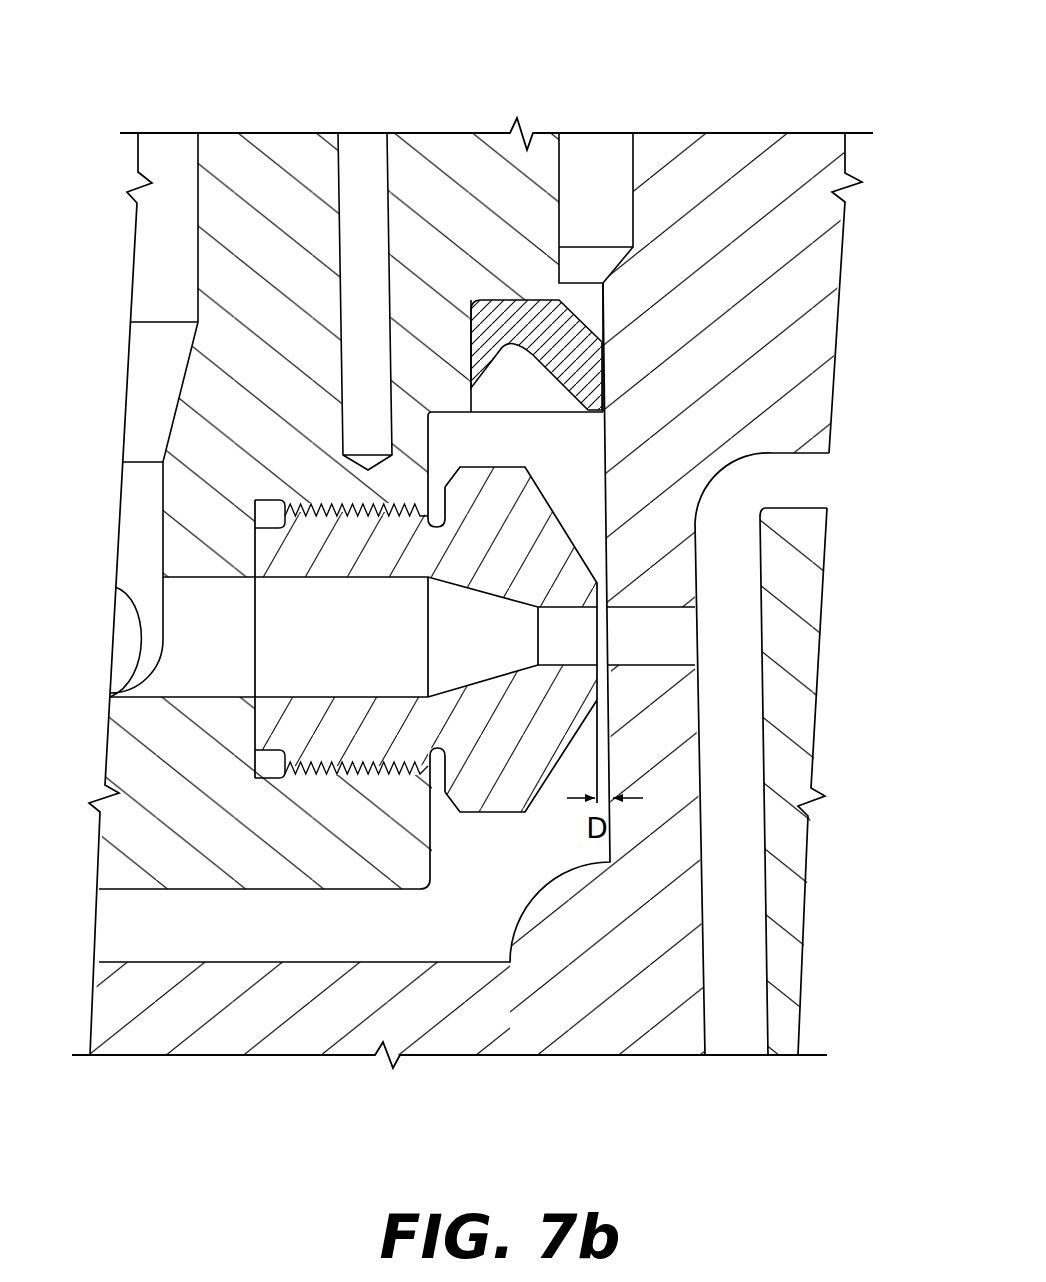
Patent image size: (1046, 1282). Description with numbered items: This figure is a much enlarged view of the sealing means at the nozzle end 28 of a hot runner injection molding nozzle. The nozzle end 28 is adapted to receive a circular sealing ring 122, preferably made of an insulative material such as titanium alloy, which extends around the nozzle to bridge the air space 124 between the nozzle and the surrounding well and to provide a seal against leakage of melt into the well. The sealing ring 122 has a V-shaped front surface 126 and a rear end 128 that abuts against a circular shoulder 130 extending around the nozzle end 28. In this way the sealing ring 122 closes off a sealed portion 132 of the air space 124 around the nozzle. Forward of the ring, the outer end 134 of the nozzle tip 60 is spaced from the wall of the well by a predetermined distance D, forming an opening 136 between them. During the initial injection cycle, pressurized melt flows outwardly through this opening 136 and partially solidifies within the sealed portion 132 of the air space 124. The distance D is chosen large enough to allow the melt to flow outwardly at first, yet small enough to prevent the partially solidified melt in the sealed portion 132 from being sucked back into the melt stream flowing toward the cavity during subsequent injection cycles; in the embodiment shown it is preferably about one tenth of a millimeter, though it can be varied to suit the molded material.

The nozzle end 28 is at (267, 140).
The nozzle tip 60 is at (507, 815).
The sealing ring 122 is at (600, 370).
The air space 124 is at (567, 452).
The V-shaped front surface 126 is at (503, 348).
The rear end 128 is at (533, 313).
The circular shoulder 130 is at (543, 310).
The sealed portion 132 is at (587, 518).
The outer end 134 is at (610, 588).
The opening 136 is at (610, 685).